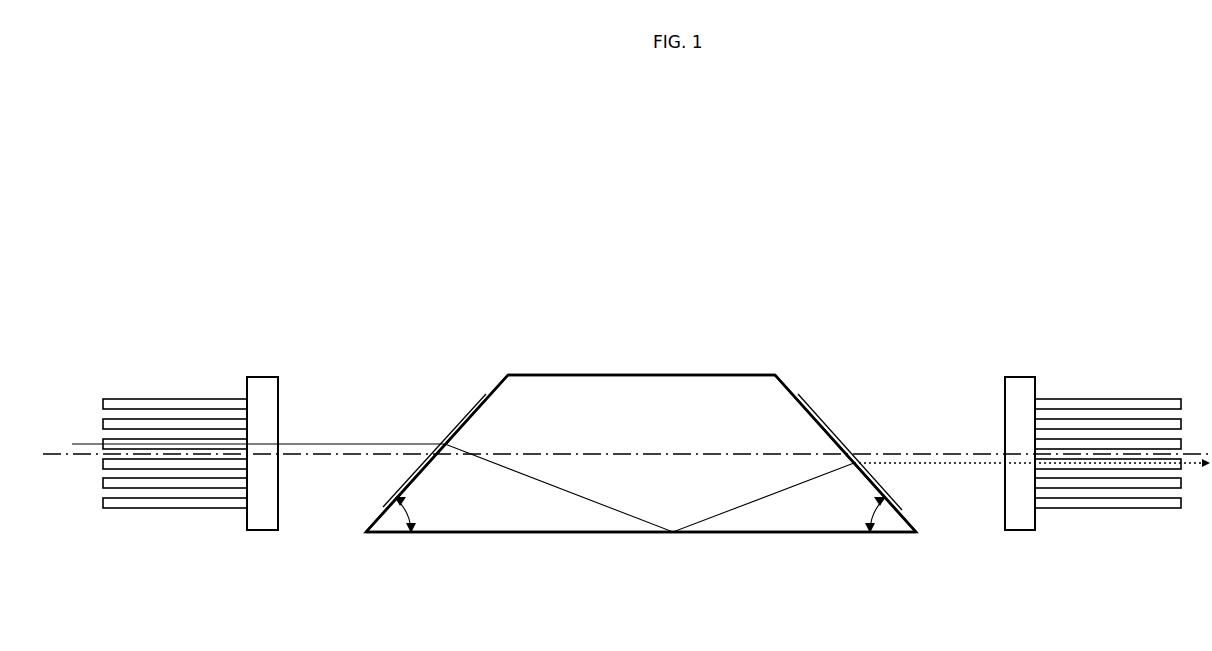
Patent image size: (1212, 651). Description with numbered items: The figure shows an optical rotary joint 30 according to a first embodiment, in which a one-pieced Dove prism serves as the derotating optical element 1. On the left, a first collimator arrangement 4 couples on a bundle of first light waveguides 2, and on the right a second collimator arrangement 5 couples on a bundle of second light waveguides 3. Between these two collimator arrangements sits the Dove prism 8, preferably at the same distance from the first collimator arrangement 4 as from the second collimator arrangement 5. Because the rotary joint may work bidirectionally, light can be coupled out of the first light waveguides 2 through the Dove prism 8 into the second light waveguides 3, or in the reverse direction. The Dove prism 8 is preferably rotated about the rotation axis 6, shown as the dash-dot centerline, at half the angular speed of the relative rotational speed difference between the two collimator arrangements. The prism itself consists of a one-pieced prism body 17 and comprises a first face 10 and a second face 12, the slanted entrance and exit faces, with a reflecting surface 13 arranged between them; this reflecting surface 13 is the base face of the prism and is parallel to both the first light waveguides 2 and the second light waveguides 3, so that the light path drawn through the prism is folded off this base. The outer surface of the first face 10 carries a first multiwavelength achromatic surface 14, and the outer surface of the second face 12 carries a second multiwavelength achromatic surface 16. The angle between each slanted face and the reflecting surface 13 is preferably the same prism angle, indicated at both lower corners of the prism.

The derotating optical element 1 is at (700, 388).
The first light waveguides 2 is at (182, 402).
The second light waveguides 3 is at (1100, 403).
The first collimator arrangement 4 is at (263, 392).
The second collimator arrangement 5 is at (1020, 392).
The rotation axis 6 is at (638, 453).
The Dove prism 8 is at (575, 374).
The first face 10 is at (500, 380).
The second face 12 is at (785, 378).
The reflecting surface 13 is at (792, 535).
The first multiwavelength achromatic surface 14 is at (463, 415).
The second multiwavelength achromatic surface 16 is at (820, 413).
The prism body 17 is at (497, 518).
The optical rotary joint 30 is at (911, 232).